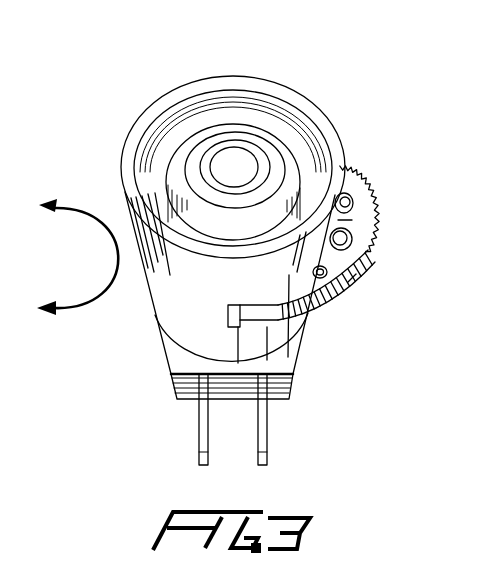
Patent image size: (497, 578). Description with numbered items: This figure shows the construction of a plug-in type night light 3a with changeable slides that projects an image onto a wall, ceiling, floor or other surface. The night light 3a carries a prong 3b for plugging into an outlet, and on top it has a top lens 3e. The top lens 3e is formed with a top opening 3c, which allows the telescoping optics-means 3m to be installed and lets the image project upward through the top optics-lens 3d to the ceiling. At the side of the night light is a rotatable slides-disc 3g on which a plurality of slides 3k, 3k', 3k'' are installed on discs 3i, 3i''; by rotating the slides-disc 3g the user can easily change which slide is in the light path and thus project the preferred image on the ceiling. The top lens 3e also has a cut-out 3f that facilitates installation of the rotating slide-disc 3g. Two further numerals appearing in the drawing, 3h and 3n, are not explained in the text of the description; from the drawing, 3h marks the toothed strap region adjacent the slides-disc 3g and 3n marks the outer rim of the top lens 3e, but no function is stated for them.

The night light 3a is at (185, 363).
The prong 3b is at (262, 436).
The top opening 3c is at (230, 122).
The top optics-lens 3d is at (243, 158).
The top lens 3e is at (170, 307).
The cut-out 3f is at (243, 317).
The rotatable slides-disc 3g is at (377, 205).
The rack 3h is at (320, 308).
The disc 3i is at (382, 235).
The disc 3i'' is at (389, 310).
The slide 3k is at (368, 163).
The slide 3k' is at (380, 262).
The slide 3k'' is at (352, 323).
The telescoping optics-means 3m is at (220, 144).
The outer rim 3n is at (257, 82).